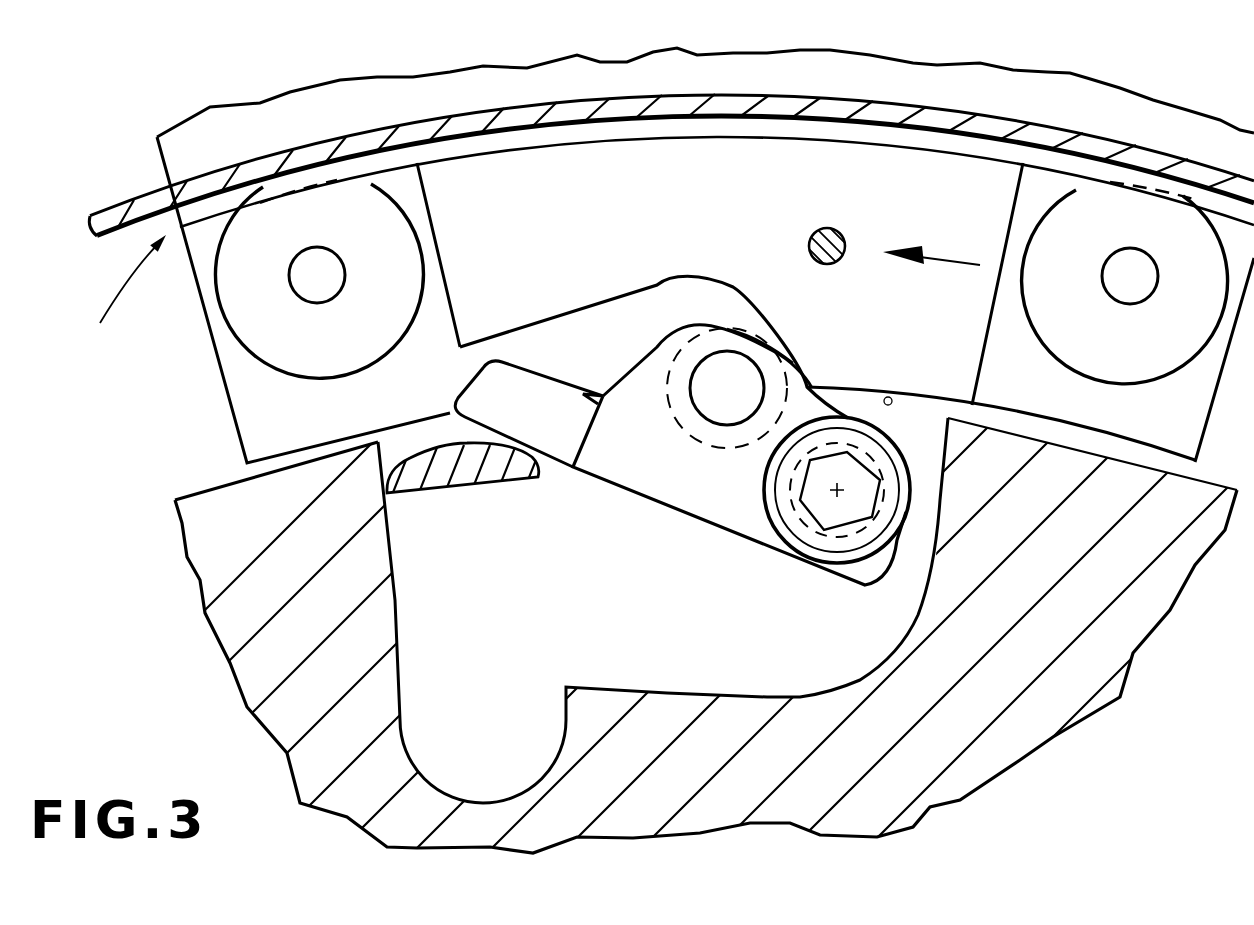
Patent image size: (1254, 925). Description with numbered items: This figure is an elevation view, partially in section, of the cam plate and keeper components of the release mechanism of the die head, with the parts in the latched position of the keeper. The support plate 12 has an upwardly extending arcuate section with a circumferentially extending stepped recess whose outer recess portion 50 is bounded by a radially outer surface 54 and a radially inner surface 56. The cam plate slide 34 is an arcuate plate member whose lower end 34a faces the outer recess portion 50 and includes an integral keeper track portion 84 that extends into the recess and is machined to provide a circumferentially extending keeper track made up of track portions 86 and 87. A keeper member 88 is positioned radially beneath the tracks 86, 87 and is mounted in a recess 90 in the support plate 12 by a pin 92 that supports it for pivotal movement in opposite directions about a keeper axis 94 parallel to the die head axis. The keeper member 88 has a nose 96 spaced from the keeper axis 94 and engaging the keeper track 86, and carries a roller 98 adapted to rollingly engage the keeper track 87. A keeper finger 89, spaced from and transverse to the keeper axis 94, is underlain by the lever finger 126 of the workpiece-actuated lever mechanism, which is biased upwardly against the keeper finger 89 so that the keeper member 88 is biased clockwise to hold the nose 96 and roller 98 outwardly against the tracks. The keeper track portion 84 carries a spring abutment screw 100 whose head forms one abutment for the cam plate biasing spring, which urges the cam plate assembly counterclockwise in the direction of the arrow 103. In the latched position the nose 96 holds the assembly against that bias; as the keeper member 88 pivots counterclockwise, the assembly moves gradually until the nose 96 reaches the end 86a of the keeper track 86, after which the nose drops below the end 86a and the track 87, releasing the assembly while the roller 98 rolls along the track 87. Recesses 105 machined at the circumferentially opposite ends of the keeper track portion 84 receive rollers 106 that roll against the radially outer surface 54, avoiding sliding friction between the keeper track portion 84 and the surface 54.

The support plate 12 is at (215, 563).
The cam plate slide 34 is at (178, 158).
The lower end of cam plate slide 34a is at (220, 378).
The outer recess portion 50 is at (113, 288).
The radially outer surface 54 is at (123, 213).
The radially inner surface 56 is at (203, 490).
The keeper track portion 84 is at (570, 163).
The keeper track 86 is at (660, 283).
The end of keeper track 86a is at (820, 387).
The keeper track 87 is at (888, 398).
The keeper member 88 is at (677, 497).
The keeper finger 89 is at (512, 387).
The recess 90 is at (665, 651).
The pin 92 is at (797, 480).
The keeper axis 94 is at (832, 490).
The nose 96 is at (790, 360).
The roller 98 is at (752, 330).
The spring abutment screw 100 is at (826, 228).
The arrow 103 is at (935, 257).
The recesses 105 is at (408, 193).
The rollers 106 is at (381, 256).
The lever finger 126 is at (463, 478).